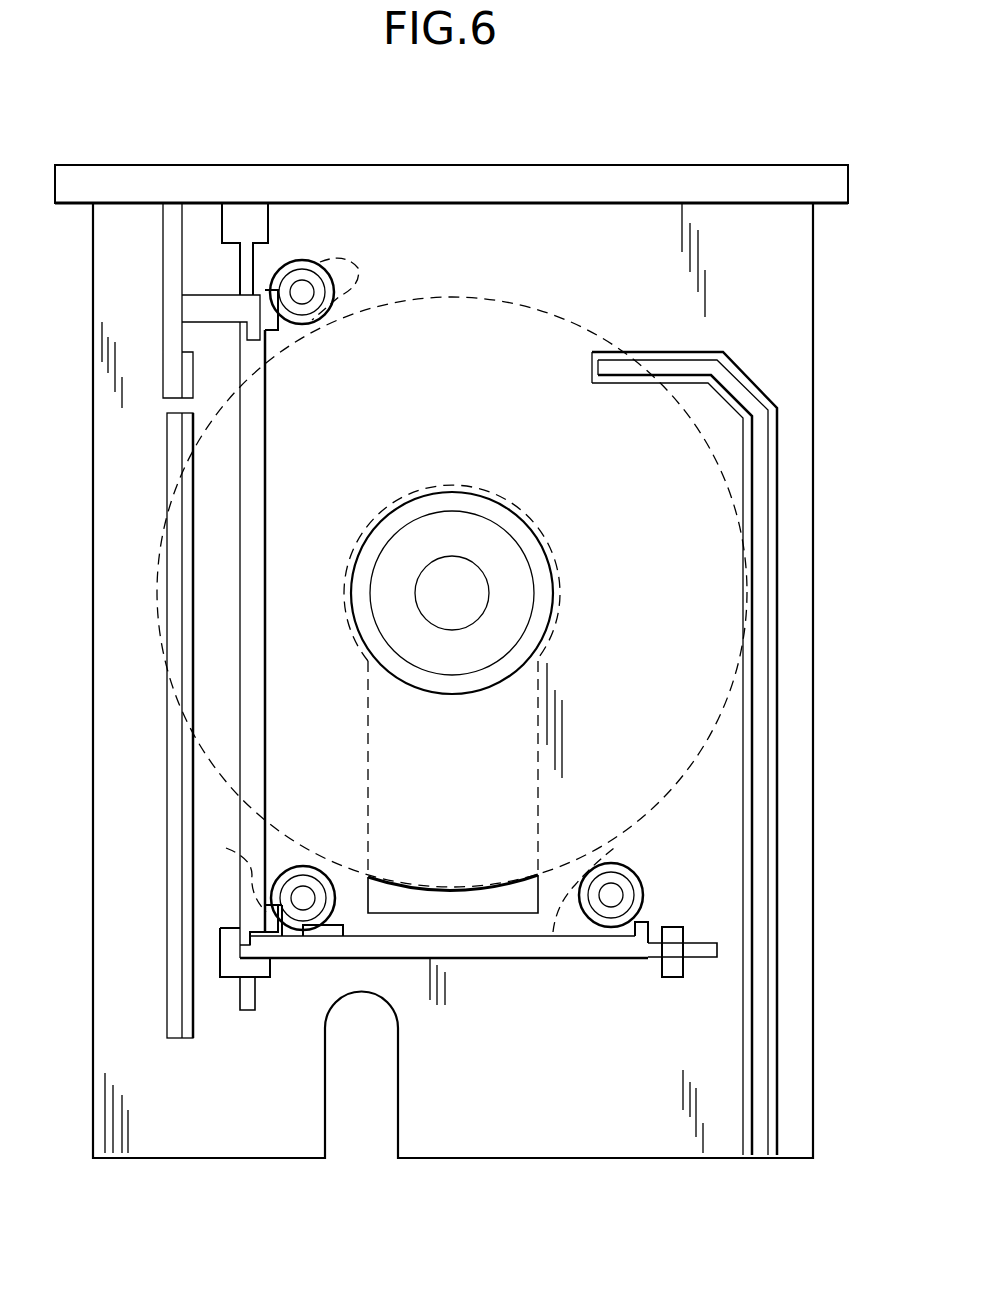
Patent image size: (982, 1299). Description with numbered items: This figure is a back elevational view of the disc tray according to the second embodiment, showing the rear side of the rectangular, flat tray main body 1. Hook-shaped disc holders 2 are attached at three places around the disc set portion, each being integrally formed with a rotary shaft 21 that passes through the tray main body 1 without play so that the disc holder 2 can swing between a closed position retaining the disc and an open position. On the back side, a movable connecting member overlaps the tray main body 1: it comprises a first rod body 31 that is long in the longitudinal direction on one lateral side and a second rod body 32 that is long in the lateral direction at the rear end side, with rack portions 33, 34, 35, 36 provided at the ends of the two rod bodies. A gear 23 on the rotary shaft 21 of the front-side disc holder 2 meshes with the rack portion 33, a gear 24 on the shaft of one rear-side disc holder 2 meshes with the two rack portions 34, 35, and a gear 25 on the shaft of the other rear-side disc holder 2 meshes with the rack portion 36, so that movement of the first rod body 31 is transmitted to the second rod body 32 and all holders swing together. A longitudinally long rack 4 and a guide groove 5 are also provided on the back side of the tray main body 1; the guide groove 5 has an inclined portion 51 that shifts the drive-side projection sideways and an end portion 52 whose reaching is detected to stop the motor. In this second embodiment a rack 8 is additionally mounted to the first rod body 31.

The tray main body 1 is at (813, 327).
The disc holder 2 is at (360, 268).
The rack 4 is at (196, 588).
The guide groove 5 is at (721, 723).
The rack 8 is at (173, 368).
The rotary shaft 21 is at (492, 570).
The gear 23 is at (313, 323).
The gear 24 is at (313, 870).
The gear 25 is at (606, 863).
The first rod body 31 is at (267, 507).
The second rod body 32 is at (498, 960).
The rack portion 33 is at (278, 330).
The rack portion 34 is at (272, 921).
The rack portion 35 is at (330, 927).
The rack portion 36 is at (633, 930).
The inclined portion 51 is at (740, 385).
The end portion 52 is at (617, 370).